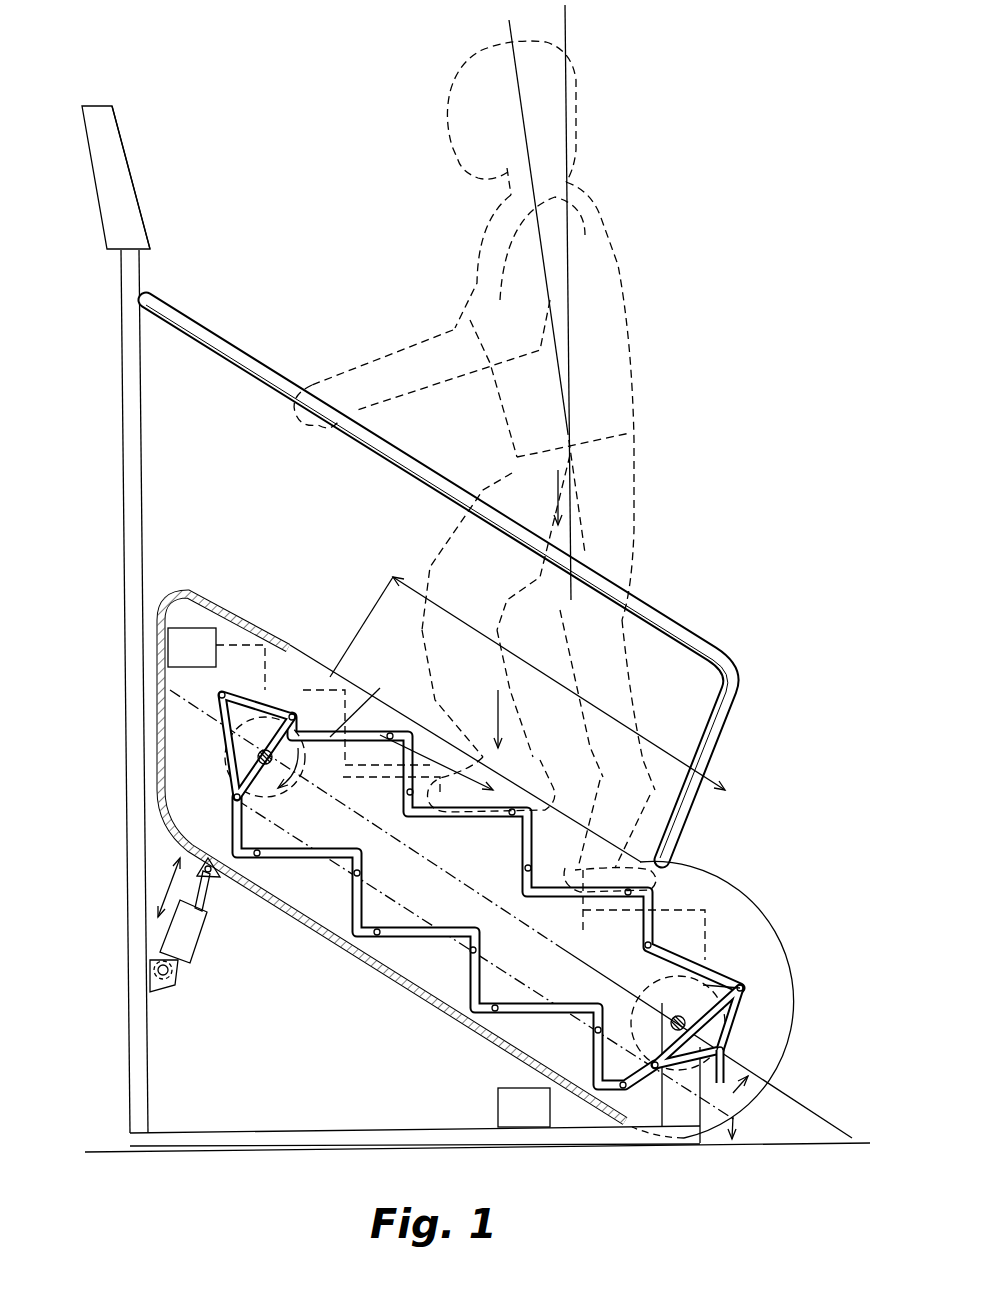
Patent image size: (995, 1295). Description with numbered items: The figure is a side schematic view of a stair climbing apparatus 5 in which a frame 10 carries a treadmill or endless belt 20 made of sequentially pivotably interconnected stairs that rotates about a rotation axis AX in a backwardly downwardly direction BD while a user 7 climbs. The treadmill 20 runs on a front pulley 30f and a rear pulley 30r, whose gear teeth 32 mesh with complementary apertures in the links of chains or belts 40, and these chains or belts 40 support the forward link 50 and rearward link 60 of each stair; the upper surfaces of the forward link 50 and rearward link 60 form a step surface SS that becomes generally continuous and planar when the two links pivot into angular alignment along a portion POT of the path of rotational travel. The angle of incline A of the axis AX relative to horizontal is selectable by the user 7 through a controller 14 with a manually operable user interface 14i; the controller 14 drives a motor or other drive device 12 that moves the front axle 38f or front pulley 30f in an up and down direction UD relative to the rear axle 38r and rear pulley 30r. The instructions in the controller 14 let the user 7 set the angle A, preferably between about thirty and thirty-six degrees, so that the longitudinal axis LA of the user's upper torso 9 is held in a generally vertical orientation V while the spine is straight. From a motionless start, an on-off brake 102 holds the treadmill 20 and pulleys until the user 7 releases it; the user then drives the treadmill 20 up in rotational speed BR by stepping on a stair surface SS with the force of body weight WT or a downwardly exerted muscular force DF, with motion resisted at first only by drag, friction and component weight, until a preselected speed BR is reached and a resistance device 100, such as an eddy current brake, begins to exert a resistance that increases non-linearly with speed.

The stair climbing apparatus 5 is at (110, 358).
The user 7 is at (620, 297).
The upper torso 9 is at (620, 327).
The frame 10 is at (126, 578).
The motor or other drive device 12 is at (195, 928).
The controller 14 is at (100, 103).
The manually operable user interface 14i is at (129, 163).
The treadmill or endless belt 20 is at (380, 967).
The front pulley 30f is at (258, 755).
The front axle 38f is at (430, 727).
The rear pulley 30r is at (727, 978).
The rear axle 38r is at (740, 1048).
The gear teeth 32 is at (693, 928).
The chains or belts 40 is at (703, 937).
The forward link 50 is at (480, 814).
The rearward link 60 is at (522, 847).
The resistance device 100 is at (216, 659).
The on-off brake 102 is at (524, 1107).
The longitudinal axis of the user's upper torso LA is at (509, 27).
The vertical orientation V is at (566, 27).
The user's weight WT is at (558, 489).
The portion of the overall path of rotational travel POT is at (545, 677).
The rotational speed BR is at (370, 703).
The backwardly downwardly direction BD is at (468, 758).
The downwardly user exerted force DF is at (500, 716).
The step surface SS is at (512, 790).
The up and down direction UD is at (165, 872).
The rotation axis AX is at (806, 1112).
The angle of incline A is at (736, 1107).